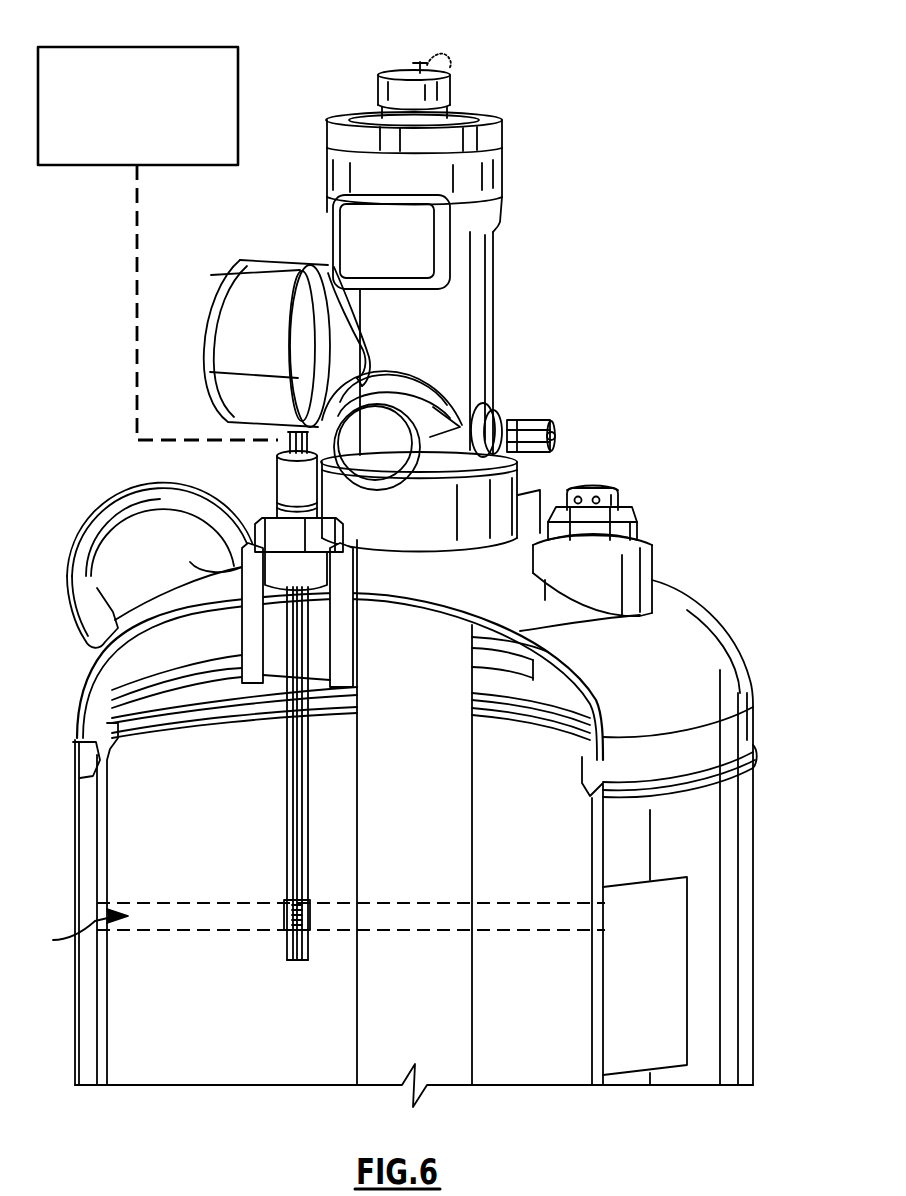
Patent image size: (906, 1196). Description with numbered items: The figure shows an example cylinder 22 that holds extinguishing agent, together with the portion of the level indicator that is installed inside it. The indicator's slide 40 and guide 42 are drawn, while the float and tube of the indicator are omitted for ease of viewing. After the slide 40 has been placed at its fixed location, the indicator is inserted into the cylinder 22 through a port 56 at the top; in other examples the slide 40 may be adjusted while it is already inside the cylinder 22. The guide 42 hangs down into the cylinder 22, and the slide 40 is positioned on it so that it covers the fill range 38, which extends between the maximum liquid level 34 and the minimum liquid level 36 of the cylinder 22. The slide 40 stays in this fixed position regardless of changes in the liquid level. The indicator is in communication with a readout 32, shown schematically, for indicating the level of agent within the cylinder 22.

The cylinder 22 is at (708, 837).
The readout 32 is at (123, 55).
The maximum liquid level 34 is at (140, 903).
The minimum liquid level 36 is at (140, 930).
The fill range 38 is at (73, 932).
The slide 40 is at (310, 917).
The guide 42 is at (300, 790).
The port 56 is at (273, 624).